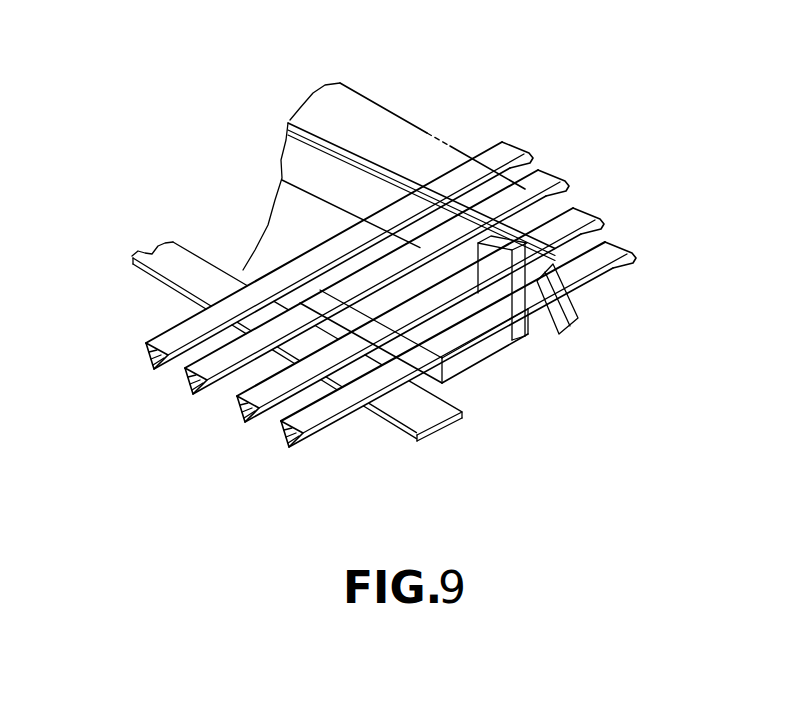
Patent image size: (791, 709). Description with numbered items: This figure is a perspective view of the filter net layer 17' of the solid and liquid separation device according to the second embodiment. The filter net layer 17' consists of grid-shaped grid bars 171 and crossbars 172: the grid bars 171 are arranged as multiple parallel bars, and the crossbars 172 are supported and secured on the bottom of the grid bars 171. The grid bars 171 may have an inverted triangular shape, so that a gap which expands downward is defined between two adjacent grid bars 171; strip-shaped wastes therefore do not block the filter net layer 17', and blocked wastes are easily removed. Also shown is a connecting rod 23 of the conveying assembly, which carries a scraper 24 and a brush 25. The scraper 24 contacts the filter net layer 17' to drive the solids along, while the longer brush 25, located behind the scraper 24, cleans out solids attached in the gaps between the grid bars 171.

The filter net layer 17' is at (270, 68).
The grid bars 171 is at (167, 338).
The crossbars 172 is at (430, 415).
The connecting rod 23 is at (373, 100).
The scraper 24 is at (477, 355).
The brush 25 is at (537, 297).